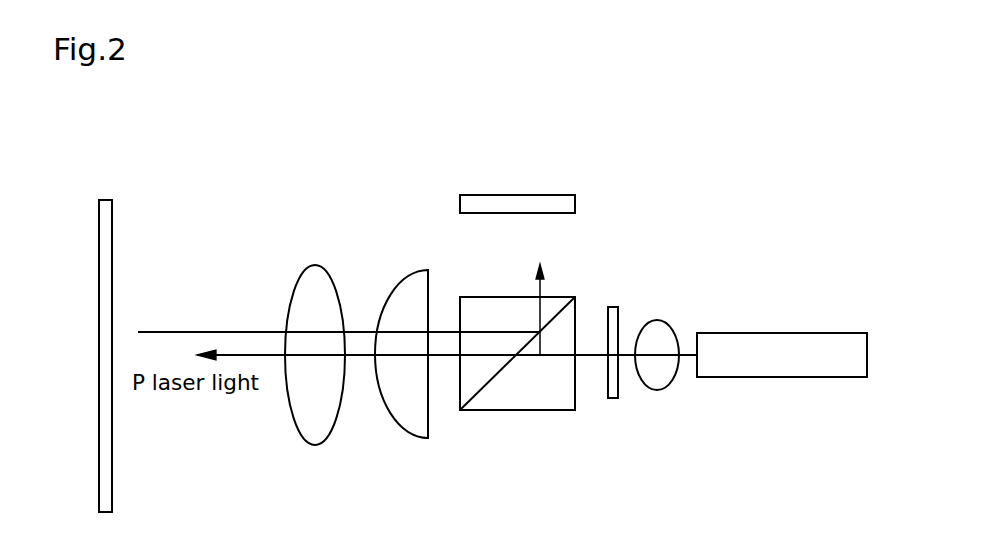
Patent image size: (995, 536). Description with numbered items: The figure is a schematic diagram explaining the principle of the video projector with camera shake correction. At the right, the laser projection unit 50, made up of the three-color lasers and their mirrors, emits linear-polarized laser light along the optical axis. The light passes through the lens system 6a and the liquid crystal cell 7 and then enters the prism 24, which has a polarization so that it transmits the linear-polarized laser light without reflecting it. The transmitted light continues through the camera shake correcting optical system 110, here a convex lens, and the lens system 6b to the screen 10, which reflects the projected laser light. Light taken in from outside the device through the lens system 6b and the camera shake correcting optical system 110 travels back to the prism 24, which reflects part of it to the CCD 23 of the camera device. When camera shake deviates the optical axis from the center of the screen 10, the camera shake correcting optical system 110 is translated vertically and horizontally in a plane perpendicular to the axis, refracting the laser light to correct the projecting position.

The screen 10 is at (111, 199).
The lens system 6b is at (316, 265).
The camera shake correcting optical system 110 is at (416, 438).
The prism 24 is at (553, 410).
The CCD 23 is at (576, 198).
The liquid crystal cell 7 is at (613, 399).
The lens system 6a is at (659, 319).
The laser projection unit 50 is at (835, 332).